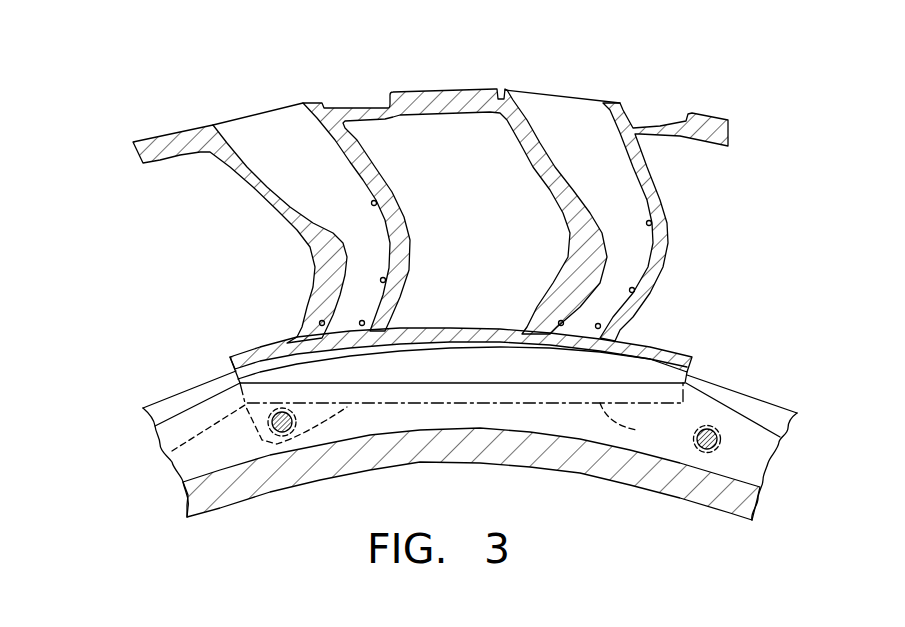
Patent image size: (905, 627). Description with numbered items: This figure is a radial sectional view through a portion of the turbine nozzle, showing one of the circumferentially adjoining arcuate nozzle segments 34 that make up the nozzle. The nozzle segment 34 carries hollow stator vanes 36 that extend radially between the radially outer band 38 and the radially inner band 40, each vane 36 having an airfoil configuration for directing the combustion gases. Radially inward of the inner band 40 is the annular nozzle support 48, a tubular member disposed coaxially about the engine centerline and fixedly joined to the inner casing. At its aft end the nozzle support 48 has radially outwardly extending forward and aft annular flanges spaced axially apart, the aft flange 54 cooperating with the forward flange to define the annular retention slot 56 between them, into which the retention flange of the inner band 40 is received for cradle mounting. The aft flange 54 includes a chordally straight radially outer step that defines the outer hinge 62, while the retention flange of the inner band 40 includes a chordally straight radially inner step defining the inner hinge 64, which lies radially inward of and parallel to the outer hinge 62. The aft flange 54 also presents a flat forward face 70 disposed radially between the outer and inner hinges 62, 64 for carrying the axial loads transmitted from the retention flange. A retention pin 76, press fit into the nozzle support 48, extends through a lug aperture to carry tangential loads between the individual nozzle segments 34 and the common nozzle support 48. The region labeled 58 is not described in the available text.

The nozzle segment 34 is at (432, 207).
The stator vane 36 is at (668, 222).
The outer band 38 is at (423, 87).
The inner band 40 is at (443, 323).
The nozzle support 48 is at (182, 506).
The aft flange 54 is at (160, 446).
The retention slot 56 is at (243, 446).
The pin 58 is at (270, 445).
The outer hinge 62 is at (410, 382).
The inner hinge 64 is at (636, 425).
The forward face 70 is at (585, 428).
The retention pin 76 is at (718, 437).